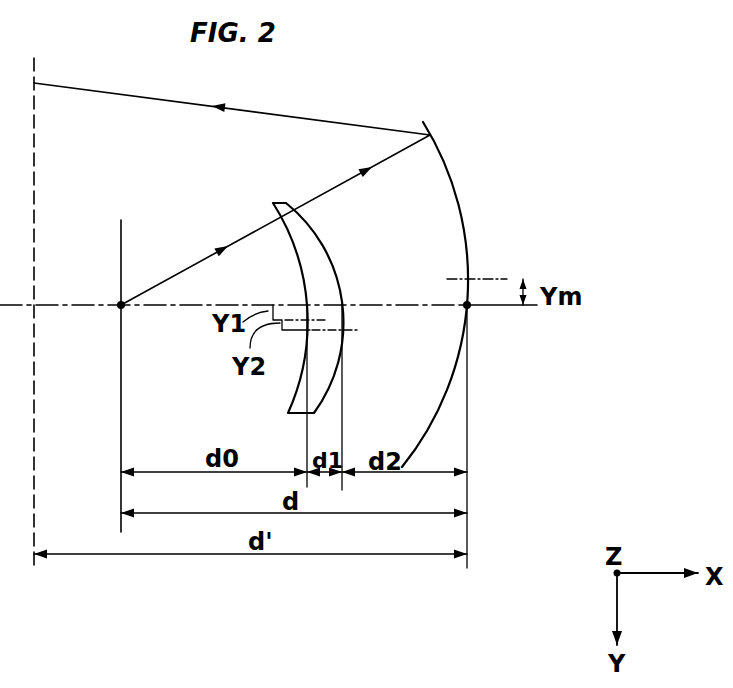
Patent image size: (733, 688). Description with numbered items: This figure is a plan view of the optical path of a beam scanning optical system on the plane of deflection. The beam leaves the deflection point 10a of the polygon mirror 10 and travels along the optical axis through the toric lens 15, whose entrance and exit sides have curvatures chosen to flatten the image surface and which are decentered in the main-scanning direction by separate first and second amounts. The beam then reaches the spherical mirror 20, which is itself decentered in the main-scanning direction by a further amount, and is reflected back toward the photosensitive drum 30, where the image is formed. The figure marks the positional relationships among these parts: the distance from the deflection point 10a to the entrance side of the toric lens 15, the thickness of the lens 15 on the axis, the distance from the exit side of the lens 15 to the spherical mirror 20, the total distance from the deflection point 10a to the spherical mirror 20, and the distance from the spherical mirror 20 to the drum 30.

The polygon mirror 10 is at (122, 245).
The deflection point 10a is at (124, 307).
The toric lens 15 is at (323, 248).
The spherical mirror 20 is at (443, 394).
The photosensitive drum 30 is at (34, 135).